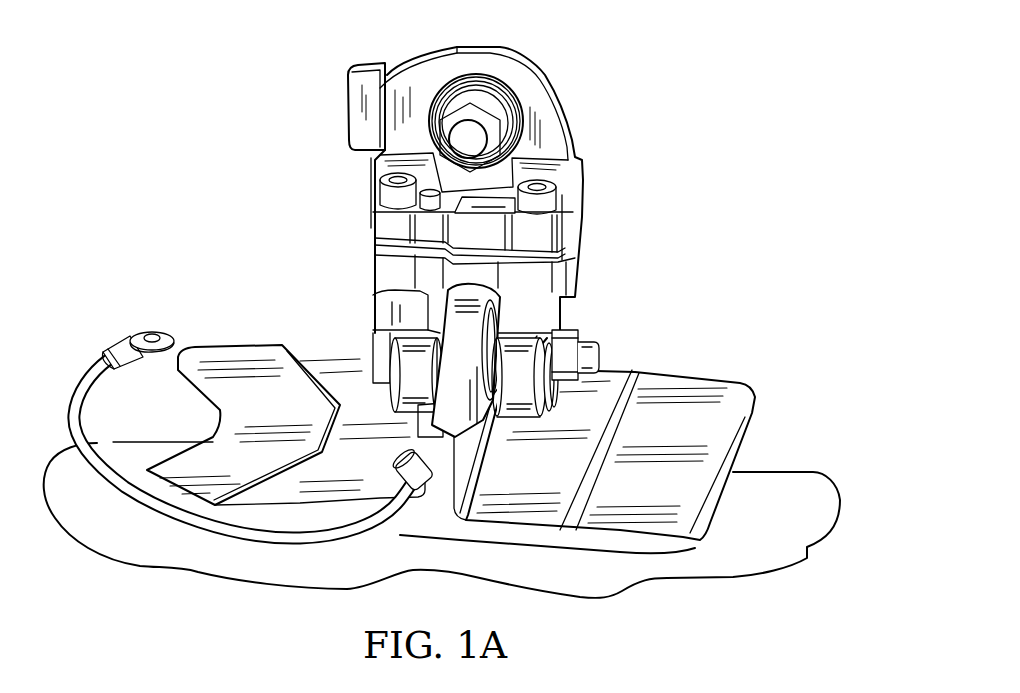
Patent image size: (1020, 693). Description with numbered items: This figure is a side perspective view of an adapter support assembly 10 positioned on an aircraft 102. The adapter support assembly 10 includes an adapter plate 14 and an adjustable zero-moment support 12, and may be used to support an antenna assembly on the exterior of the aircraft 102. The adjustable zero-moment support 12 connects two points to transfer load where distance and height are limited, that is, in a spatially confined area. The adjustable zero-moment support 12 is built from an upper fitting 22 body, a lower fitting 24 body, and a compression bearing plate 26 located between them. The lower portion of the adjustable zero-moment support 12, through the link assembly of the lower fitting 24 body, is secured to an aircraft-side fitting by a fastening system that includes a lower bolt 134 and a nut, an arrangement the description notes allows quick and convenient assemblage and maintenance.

The adapter support assembly 10 is at (327, 56).
The adjustable zero-moment support 12 is at (488, 190).
The lower bolt 134 is at (500, 142).
The upper fitting body 22 is at (382, 228).
The compression bearing plate 26 is at (377, 242).
The lower fitting body 24 is at (388, 276).
The adapter plate 14 is at (549, 486).
The aircraft 102 is at (370, 576).